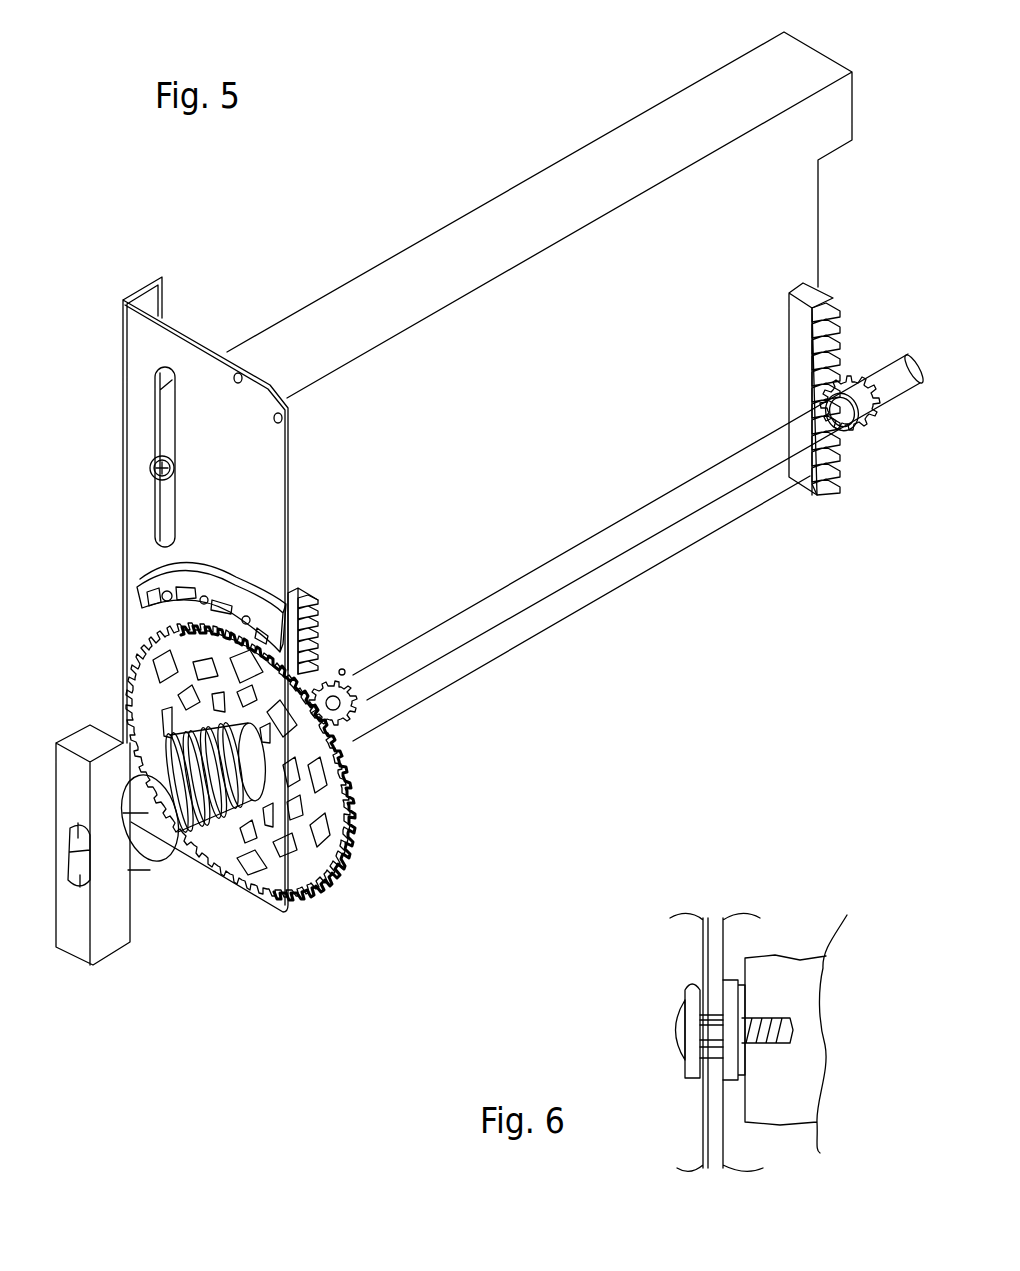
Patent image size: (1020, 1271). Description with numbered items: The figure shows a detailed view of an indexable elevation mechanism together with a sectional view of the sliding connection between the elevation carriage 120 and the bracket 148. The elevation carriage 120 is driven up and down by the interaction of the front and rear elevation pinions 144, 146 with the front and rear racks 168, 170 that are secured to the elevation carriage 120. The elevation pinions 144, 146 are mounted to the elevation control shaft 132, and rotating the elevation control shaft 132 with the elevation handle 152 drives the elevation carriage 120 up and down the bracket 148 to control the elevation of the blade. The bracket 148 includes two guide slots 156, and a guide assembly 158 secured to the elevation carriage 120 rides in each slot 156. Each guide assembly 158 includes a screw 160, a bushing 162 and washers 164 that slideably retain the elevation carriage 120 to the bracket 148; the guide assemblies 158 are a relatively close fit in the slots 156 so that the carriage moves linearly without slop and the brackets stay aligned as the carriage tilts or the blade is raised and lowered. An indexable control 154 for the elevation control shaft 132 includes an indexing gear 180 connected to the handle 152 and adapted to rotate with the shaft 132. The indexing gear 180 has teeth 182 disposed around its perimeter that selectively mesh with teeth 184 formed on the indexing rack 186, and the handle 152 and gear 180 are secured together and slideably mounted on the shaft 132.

In FIG. 5, the elevation carriage 120 is at (545, 375).
In FIG. 6, the elevation carriage 120 is at (792, 1122).
In FIG. 5, the elevation control shaft 132 is at (537, 570).
In FIG. 5, the front elevation pinion 144 is at (360, 722).
In FIG. 5, the rear elevation pinion 146 is at (845, 470).
In FIG. 5, the bracket 148 is at (193, 333).
In FIG. 6, the bracket 148 is at (723, 958).
In FIG. 5, the elevation handle 152 is at (78, 922).
In FIG. 5, the indexable control 154 is at (98, 687).
In FIG. 5, the guide slot 156 is at (175, 432).
In FIG. 6, the guide slot 156 is at (710, 938).
In FIG. 5, the guide assembly 158 is at (136, 455).
In FIG. 6, the screw 160 is at (762, 1018).
In FIG. 6, the bushing 162 is at (718, 1062).
In FIG. 6, the washers 164 is at (687, 988).
In FIG. 5, the front rack 168 is at (318, 648).
In FIG. 5, the rear rack 170 is at (808, 372).
In FIG. 5, the indexing gear 180 is at (303, 870).
In FIG. 5, the teeth 182 is at (360, 822).
In FIG. 5, the teeth 184 is at (225, 625).
In FIG. 5, the indexing rack 186 is at (165, 604).